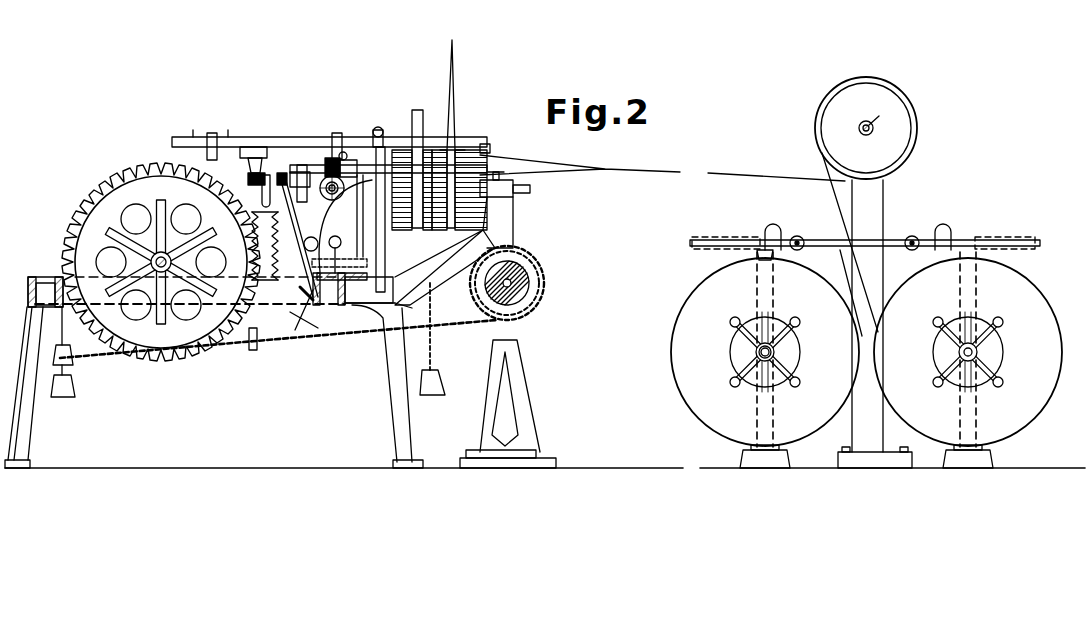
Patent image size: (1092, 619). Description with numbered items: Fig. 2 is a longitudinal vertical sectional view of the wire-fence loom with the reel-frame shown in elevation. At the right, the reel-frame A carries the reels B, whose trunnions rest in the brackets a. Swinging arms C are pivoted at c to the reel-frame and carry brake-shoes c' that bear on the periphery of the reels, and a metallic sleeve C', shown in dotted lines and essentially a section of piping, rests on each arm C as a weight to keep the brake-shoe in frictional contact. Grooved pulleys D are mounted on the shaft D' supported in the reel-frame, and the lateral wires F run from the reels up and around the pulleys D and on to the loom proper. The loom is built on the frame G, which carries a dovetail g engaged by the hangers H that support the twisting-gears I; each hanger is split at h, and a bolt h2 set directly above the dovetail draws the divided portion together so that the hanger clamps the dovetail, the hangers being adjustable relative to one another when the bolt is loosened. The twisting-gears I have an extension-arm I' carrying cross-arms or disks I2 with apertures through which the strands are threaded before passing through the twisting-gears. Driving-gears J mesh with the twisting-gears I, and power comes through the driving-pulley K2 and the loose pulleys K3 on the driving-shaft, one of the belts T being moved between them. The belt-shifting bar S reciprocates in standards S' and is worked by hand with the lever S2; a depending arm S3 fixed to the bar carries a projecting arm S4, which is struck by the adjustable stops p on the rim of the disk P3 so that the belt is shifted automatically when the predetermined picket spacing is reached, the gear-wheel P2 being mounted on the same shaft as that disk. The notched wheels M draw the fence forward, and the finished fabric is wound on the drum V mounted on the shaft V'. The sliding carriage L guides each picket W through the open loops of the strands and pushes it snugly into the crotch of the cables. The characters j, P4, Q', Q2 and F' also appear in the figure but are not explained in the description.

The notched wheels M is at (166, 195).
The picket W is at (223, 171).
The belt-shifting bar S is at (329, 132).
The standards S' is at (276, 135).
The lever S2 is at (380, 127).
The depending arm S3 is at (244, 159).
The projecting arm S4 is at (244, 175).
The sliding carriage L is at (282, 177).
The driving-gears J is at (327, 168).
The pinion j is at (322, 200).
The twisting-gears I is at (353, 134).
The extension-arm I' is at (407, 160).
The cross-arms or disks I2 is at (490, 148).
The belts T is at (447, 110).
The gear-wheel P2 is at (264, 227).
The disk P3 is at (278, 324).
The weight P4 is at (445, 380).
The adjustable stops p is at (253, 350).
The hangers H is at (345, 223).
The split of the hanger h is at (328, 254).
The bolt h2 is at (367, 262).
The loose pulleys K3 is at (513, 190).
The driving-pulley K2 is at (459, 197).
The frame of the loom G is at (214, 372).
The dovetail g is at (406, 251).
The weight rod Q' is at (75, 326).
The weights Q2 is at (73, 355).
The drum V is at (513, 357).
The shaft V' is at (529, 283).
The lateral wires F is at (776, 163).
The thread F' is at (655, 167).
The grooved pulleys D is at (879, 128).
The shaft D' is at (876, 134).
The reel-frame A is at (867, 310).
The swinging arms C is at (865, 228).
The metallic sleeve C' is at (863, 228).
The pivot c is at (854, 236).
The brake-shoes c' is at (757, 268).
The reels B is at (672, 340).
The brackets a is at (752, 370).